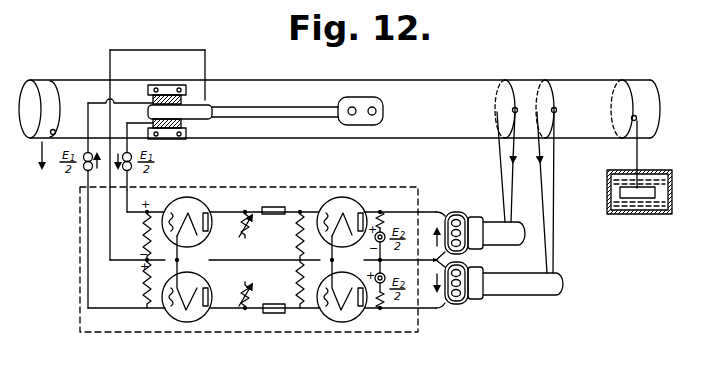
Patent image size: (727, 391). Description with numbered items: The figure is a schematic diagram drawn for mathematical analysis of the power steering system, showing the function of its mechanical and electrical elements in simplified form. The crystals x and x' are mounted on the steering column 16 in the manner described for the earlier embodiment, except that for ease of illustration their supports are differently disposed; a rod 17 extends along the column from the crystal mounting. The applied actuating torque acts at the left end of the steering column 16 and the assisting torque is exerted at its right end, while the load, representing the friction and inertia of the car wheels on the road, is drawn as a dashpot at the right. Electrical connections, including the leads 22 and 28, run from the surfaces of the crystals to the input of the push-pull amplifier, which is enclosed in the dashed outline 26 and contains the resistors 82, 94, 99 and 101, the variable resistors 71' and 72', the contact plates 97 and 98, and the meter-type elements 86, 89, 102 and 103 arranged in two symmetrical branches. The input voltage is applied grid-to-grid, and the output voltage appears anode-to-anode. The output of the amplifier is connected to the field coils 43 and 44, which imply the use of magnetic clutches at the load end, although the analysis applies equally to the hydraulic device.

The steering column 16 is at (430, 80).
The rod 17 is at (303, 117).
The lead wire 22 is at (137, 201).
The measuring circuit 26 is at (88, 189).
The lead wire 28 is at (131, 188).
The field coil 43 is at (460, 223).
The field coil 44 is at (460, 293).
The variable resistor 71' is at (260, 226).
The variable resistor 72' is at (260, 296).
The resistor 82 is at (145, 232).
The thermocouple meter 86 is at (196, 198).
The thermocouple meter 89 is at (175, 321).
The resistor 94 is at (144, 284).
The contact plate 97 is at (271, 207).
The contact plate 98 is at (273, 313).
The resistor 99 is at (301, 232).
The resistor 101 is at (297, 272).
The thermocouple meter 102 is at (342, 197).
The thermocouple meter 103 is at (336, 322).